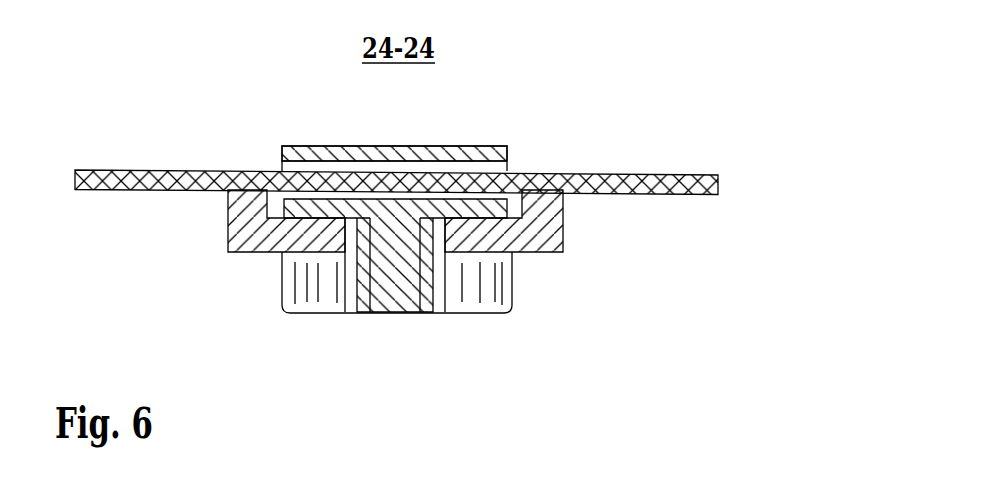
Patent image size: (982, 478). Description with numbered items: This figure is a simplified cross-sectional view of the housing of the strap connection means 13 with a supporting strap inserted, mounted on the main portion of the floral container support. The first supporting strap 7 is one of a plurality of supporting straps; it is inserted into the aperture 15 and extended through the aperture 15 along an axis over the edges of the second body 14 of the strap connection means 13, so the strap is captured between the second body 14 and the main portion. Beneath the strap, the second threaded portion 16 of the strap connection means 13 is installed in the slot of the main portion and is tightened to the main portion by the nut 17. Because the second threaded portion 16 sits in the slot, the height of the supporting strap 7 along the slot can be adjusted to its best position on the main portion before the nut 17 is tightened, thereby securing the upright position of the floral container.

The first supporting strap 7 is at (573, 172).
The strap connection means 13 is at (175, 275).
The second body 14 is at (440, 153).
The aperture 15 is at (320, 168).
The second threaded portion 16 is at (400, 296).
The nut 17 is at (300, 290).